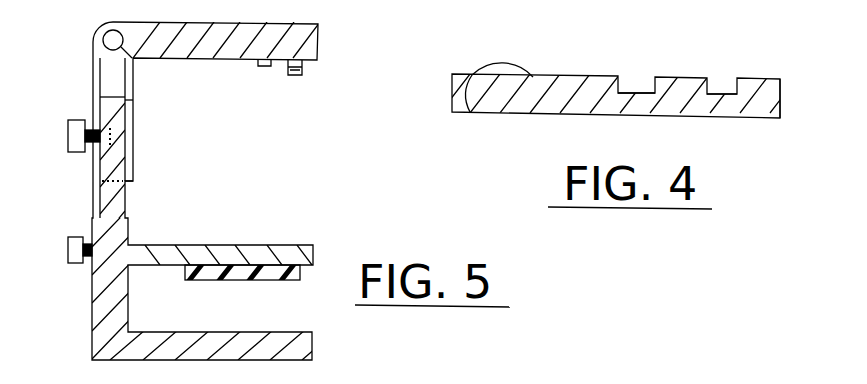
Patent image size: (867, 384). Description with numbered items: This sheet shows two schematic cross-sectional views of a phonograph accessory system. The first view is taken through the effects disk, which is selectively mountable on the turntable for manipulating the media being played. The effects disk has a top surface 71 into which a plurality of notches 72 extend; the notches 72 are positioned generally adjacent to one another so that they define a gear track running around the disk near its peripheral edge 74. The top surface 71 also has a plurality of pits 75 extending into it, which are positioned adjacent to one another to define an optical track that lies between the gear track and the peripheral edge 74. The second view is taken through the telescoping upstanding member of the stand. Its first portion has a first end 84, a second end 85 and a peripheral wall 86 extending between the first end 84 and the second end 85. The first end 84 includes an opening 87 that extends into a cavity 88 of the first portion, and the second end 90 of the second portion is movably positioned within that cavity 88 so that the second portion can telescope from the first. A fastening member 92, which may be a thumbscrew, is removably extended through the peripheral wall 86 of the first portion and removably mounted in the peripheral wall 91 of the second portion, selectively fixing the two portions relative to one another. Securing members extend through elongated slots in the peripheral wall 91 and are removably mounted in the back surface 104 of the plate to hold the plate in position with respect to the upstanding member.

In FIG. 4, the top surface 71 is at (474, 112).
In FIG. 4, the notches 72 is at (643, 95).
In FIG. 4, the peripheral edge 74 is at (780, 100).
In FIG. 4, the pits 75 is at (723, 95).
In FIG. 5, the first end 84 is at (128, 181).
In FIG. 5, the second end 85 is at (97, 41).
In FIG. 5, the peripheral wall 86 is at (117, 98).
In FIG. 5, the opening 87 is at (99, 181).
In FIG. 5, the cavity 88 is at (108, 77).
In FIG. 5, the second end 90 is at (130, 100).
In FIG. 5, the peripheral wall 91 is at (92, 282).
In FIG. 5, the fastening member 92 is at (69, 131).
In FIG. 5, the back surface 104 is at (128, 266).